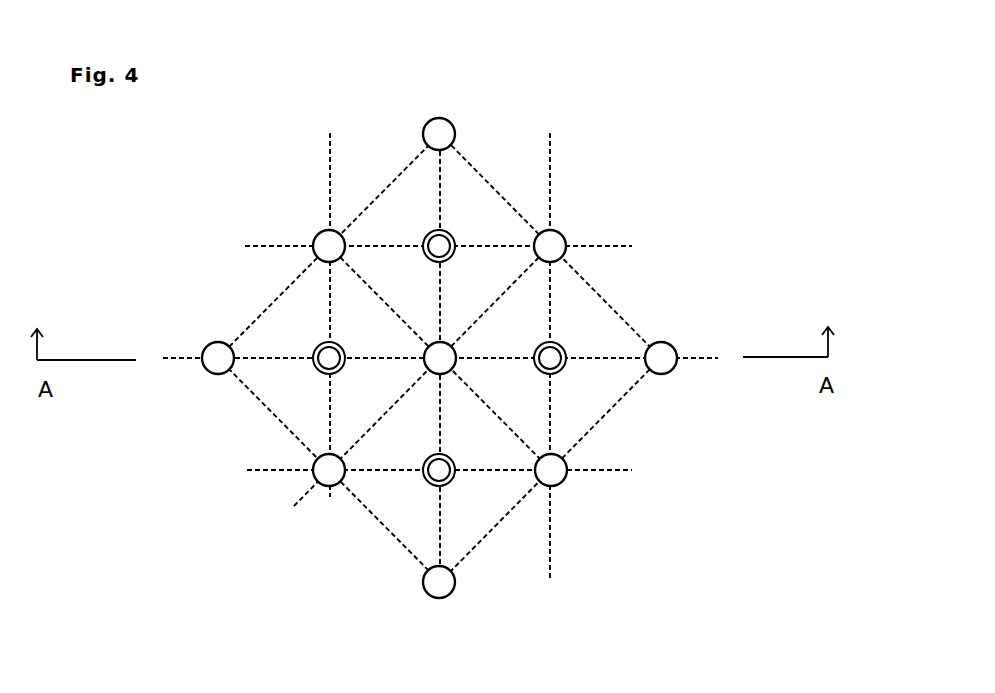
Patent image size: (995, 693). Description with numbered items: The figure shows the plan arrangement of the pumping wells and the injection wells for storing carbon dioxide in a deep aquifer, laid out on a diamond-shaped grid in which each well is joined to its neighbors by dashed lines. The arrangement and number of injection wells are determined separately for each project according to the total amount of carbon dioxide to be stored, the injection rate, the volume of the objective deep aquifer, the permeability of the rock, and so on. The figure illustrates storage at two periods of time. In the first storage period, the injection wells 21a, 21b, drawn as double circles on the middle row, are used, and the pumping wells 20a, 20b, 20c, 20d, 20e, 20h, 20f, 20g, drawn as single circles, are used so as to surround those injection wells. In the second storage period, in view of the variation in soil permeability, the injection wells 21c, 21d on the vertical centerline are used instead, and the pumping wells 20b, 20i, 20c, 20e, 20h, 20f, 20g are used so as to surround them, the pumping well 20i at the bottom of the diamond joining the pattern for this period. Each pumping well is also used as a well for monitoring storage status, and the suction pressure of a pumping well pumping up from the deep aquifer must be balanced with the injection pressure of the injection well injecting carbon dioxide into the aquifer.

The pumping well 20a is at (210, 375).
The pumping well 20b is at (325, 487).
The pumping well 20c is at (566, 485).
The pumping well 20d is at (663, 343).
The pumping well 20e is at (566, 242).
The pumping well 20f is at (315, 238).
The pumping well 20g is at (428, 342).
The pumping well 20h is at (452, 122).
The pumping well 20i is at (438, 598).
The injection well 21a is at (316, 371).
The injection well 21b is at (562, 370).
The injection well 21c is at (453, 235).
The injection well 21d is at (455, 480).